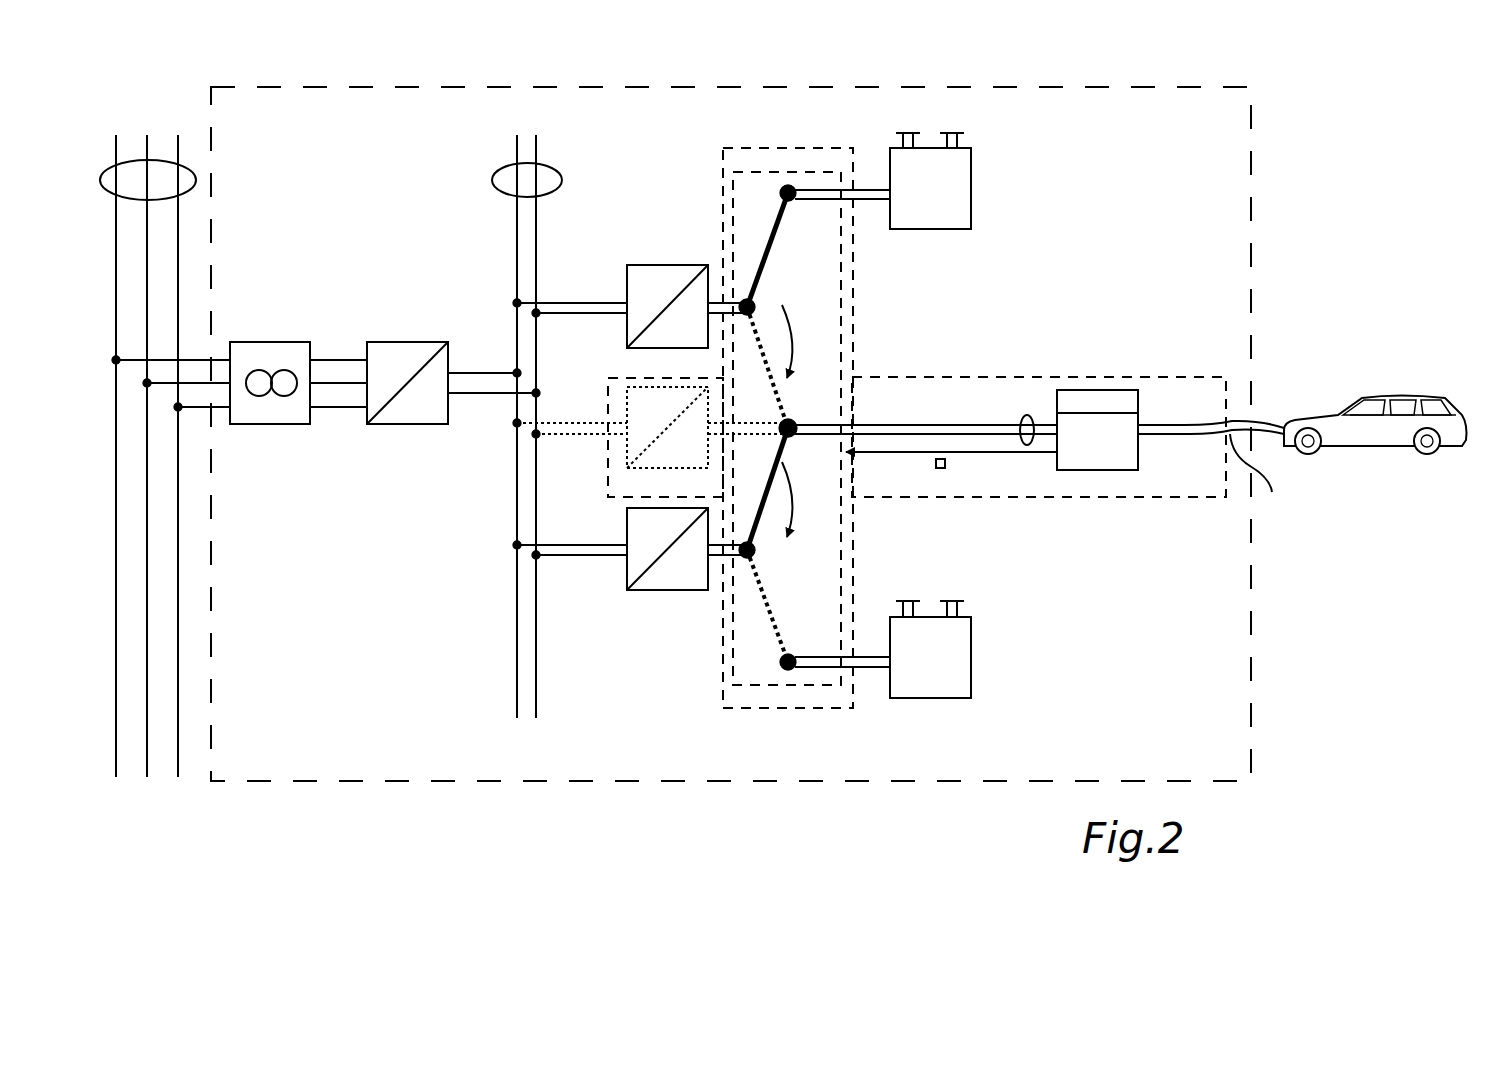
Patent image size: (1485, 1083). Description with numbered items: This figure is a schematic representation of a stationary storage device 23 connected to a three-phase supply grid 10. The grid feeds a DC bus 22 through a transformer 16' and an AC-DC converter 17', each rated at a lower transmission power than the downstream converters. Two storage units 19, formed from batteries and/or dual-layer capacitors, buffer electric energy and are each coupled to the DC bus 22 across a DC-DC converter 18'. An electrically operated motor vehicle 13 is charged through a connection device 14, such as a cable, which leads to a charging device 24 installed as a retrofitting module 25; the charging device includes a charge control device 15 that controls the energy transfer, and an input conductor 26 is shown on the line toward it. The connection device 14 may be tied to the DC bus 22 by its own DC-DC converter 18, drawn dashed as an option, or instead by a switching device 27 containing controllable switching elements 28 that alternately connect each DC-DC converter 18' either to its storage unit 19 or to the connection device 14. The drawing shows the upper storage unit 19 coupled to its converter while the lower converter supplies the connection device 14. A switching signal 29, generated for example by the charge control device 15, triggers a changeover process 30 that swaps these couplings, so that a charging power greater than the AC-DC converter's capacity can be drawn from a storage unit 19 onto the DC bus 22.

The supply grid 10 is at (196, 176).
The electrically operated motor vehicle 13 is at (1378, 398).
The connection device 14 is at (1138, 460).
The charge control device 15 is at (1103, 390).
The transformer 16' is at (212, 364).
The AC-DC converter 17' is at (423, 364).
The DC-DC converter 18 is at (650, 442).
The DC-DC converter 18' is at (630, 413).
The storage unit 19 is at (971, 190).
The DC bus 22 is at (562, 180).
The stationary storage device 23 is at (1251, 130).
The charging device 24 is at (1039, 470).
The retrofitting module 25 is at (1110, 497).
The input conductor 26 is at (1028, 400).
The switching device 27 is at (808, 172).
The switching element 28 is at (751, 228).
The switching signal 29 is at (940, 468).
The changeover process 30 is at (795, 342).